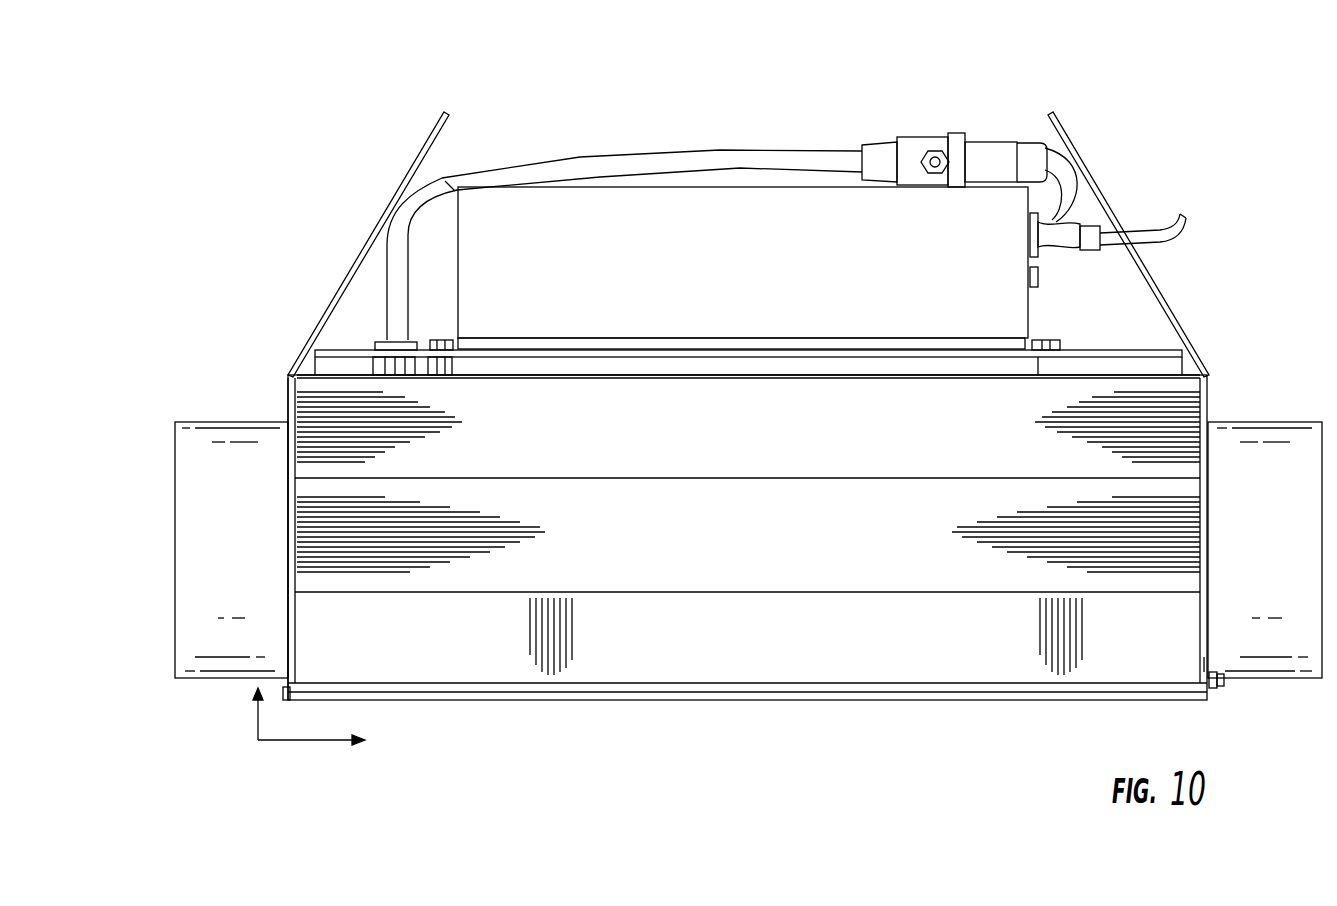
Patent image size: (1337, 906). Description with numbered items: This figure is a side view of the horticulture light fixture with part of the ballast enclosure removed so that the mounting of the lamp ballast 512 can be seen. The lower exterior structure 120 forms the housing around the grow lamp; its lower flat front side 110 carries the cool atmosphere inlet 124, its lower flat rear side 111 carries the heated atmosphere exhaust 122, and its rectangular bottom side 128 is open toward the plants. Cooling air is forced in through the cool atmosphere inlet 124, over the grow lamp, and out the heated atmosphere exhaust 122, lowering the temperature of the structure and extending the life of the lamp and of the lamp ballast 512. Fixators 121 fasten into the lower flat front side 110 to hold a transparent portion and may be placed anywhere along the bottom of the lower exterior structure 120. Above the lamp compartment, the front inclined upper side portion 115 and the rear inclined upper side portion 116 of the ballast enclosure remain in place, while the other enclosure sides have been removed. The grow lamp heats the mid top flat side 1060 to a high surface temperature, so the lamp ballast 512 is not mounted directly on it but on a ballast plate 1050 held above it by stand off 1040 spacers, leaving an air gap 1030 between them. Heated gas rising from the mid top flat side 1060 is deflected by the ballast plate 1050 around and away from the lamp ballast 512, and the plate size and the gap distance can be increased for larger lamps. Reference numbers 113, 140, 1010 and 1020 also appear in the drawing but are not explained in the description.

The lower flat front side 110 is at (1210, 390).
The lower flat rear side 111 is at (288, 403).
The front panel 113 is at (748, 472).
The front inclined upper side portion 115 is at (1155, 287).
The rear inclined upper side portion 116 is at (343, 284).
The lower exterior structure 120 is at (309, 732).
The fixators 121 is at (1230, 685).
The heated atmosphere exhaust 122 is at (262, 557).
The cool atmosphere inlet 124 is at (1290, 564).
The rectangular bottom side 128 is at (745, 715).
The power cable connector 140 is at (1160, 212).
The lamp ballast 512 is at (766, 277).
The cable connector 1010 is at (949, 138).
The cable conduit 1020 is at (643, 150).
The air gap 1030 is at (539, 370).
The stand off 1040 is at (443, 368).
The ballast plate 1050 is at (337, 338).
The mid top flat side 1060 is at (310, 364).